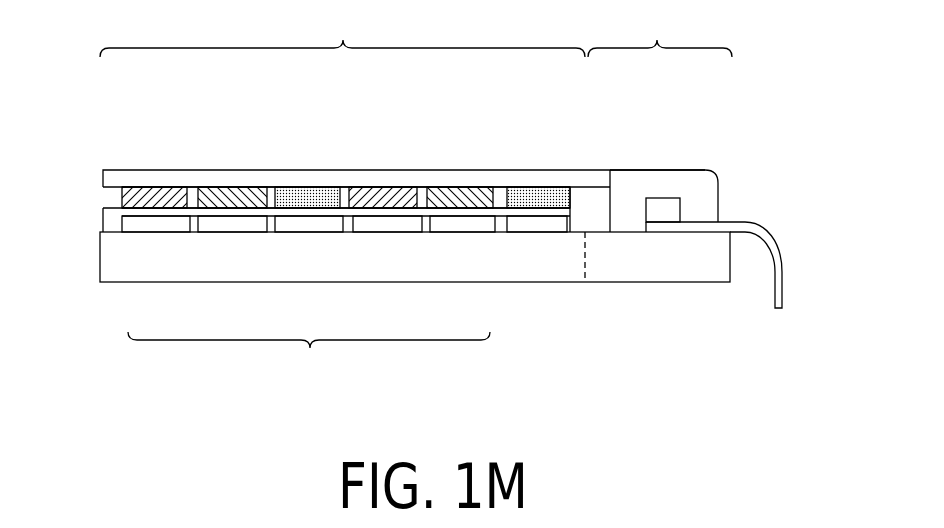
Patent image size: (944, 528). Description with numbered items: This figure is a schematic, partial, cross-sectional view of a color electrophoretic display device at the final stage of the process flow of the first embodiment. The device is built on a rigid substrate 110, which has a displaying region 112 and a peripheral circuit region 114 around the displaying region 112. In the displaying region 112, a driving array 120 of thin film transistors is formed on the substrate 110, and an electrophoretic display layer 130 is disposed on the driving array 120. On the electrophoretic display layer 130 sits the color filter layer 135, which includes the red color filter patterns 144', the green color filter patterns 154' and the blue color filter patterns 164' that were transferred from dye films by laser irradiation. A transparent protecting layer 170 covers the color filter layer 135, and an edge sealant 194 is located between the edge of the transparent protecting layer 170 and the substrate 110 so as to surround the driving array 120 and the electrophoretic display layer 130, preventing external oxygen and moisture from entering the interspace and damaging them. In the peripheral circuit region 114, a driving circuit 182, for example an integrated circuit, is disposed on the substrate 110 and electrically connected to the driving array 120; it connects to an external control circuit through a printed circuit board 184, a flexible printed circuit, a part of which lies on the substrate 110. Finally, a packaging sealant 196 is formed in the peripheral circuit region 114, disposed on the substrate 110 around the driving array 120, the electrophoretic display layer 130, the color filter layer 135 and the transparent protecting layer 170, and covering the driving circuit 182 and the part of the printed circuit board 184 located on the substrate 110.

The substrate 110 is at (644, 275).
The displaying region 112 is at (342, 33).
The peripheral circuit region 114 is at (660, 33).
The driving array 120 is at (123, 225).
The electrophoretic display layer 130 is at (113, 187).
The color filter layer 135 is at (309, 359).
The red color filter patterns 144' is at (345, 262).
The green color filter patterns 154' is at (269, 262).
The blue color filter patterns 164' is at (422, 262).
The transparent protecting layer 170 is at (373, 186).
The driving circuit 182 is at (663, 205).
The printed circuit board 184 is at (783, 288).
The edge sealant 194 is at (578, 203).
The packaging sealant 196 is at (712, 192).